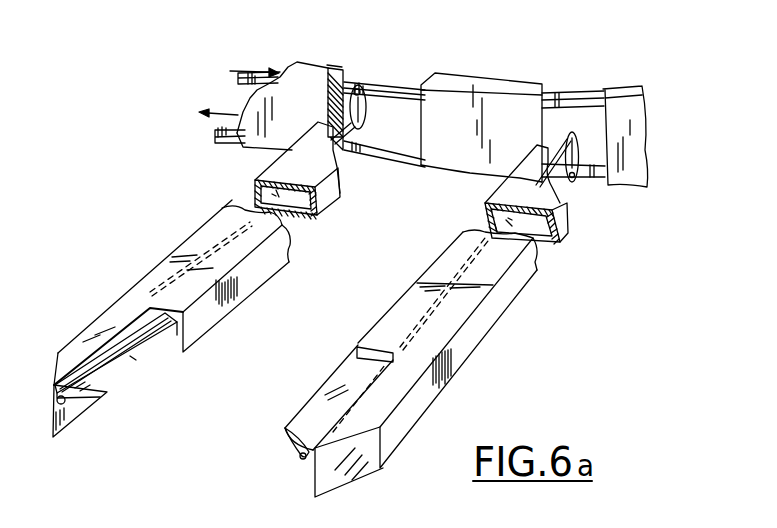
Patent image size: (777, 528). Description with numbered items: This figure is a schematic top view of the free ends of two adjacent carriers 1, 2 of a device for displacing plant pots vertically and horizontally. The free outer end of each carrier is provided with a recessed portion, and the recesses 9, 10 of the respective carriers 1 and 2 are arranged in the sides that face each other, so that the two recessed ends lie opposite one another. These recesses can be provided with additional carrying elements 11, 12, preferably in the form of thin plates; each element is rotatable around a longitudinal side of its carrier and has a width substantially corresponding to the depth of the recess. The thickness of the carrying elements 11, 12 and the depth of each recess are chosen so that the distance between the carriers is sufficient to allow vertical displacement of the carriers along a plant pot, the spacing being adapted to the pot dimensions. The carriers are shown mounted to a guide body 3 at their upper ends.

The carrier 1 is at (455, 310).
The carrier 2 is at (163, 263).
The guide body 3 is at (500, 80).
The recess 9 is at (317, 412).
The recess 10 is at (107, 371).
The carrying element 11 is at (305, 468).
The carrying element 12 is at (117, 397).